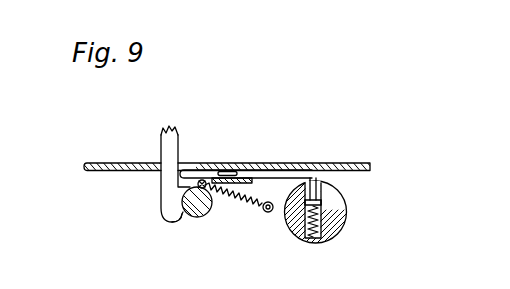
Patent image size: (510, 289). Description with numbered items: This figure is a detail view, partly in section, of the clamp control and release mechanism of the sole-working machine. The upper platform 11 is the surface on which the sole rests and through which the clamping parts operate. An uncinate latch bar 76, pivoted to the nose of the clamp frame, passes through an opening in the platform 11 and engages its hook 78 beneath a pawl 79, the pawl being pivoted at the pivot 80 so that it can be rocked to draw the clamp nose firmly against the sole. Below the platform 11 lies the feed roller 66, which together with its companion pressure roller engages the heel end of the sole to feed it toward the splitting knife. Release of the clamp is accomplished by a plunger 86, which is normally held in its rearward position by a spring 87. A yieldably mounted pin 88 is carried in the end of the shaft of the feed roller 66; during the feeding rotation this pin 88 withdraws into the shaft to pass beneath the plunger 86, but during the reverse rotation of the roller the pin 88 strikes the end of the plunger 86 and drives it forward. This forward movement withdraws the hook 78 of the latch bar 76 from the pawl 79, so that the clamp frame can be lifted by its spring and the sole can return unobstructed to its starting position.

The upper platform 11 is at (356, 163).
The feed roller 66 is at (345, 225).
The uncinate latch bar 76 is at (170, 180).
The hook 78 is at (184, 214).
The pawl 79 is at (204, 215).
The pivot 80 is at (190, 182).
The plunger 86 is at (276, 172).
The spring 87 is at (244, 204).
The yieldably mounted pin 88 is at (336, 187).